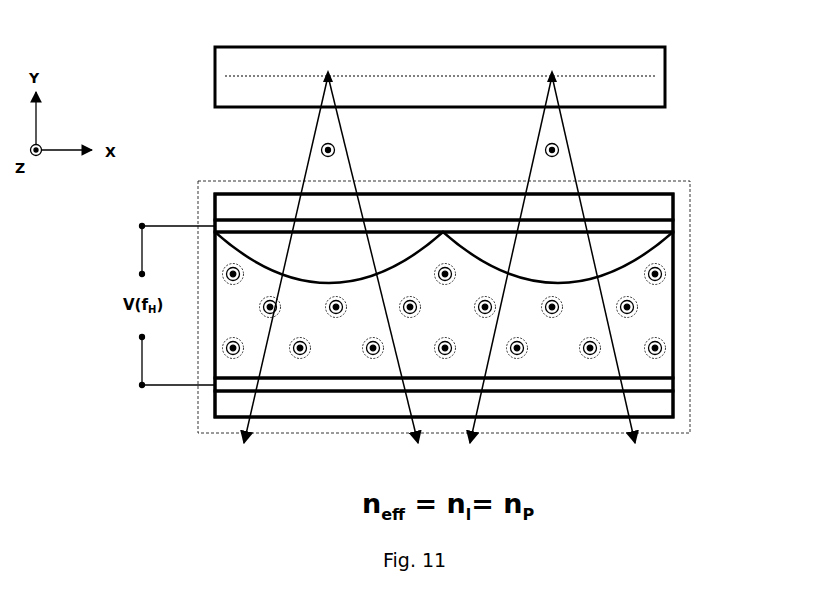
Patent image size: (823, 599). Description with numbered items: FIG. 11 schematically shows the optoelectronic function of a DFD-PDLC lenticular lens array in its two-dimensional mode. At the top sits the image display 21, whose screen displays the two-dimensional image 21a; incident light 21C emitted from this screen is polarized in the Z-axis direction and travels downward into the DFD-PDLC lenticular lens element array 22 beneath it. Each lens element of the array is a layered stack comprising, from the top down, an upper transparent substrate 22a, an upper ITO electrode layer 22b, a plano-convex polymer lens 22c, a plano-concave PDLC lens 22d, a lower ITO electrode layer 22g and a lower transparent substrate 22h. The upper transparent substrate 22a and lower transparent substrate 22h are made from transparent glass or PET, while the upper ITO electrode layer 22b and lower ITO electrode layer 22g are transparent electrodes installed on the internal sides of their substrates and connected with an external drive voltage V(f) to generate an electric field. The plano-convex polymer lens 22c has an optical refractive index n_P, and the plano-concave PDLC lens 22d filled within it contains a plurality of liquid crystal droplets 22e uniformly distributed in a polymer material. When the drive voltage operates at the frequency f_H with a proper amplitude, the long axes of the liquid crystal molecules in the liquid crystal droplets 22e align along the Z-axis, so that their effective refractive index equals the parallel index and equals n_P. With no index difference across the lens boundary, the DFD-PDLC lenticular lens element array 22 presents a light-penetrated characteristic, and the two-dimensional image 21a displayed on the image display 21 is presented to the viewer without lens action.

The image display 21 is at (473, 58).
The 2D image 21a is at (488, 85).
The incident light 21C is at (440, 157).
The DFD-PDLC lenticular lens element array 22 is at (474, 281).
The upper transparent substrate 22a is at (487, 205).
The upper ITO electrode layer 22b is at (487, 230).
The plano-convex polymer lens 22c is at (485, 257).
The plano-concave PDLC lens 22d is at (488, 305).
The liquid crystal droplets 22e is at (491, 311).
The lower ITO electrode layer 22g is at (487, 381).
The lower transparent substrate 22h is at (487, 405).